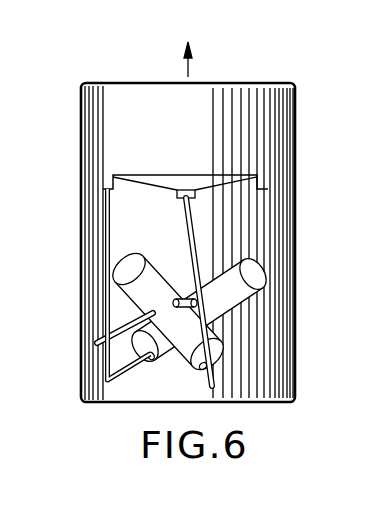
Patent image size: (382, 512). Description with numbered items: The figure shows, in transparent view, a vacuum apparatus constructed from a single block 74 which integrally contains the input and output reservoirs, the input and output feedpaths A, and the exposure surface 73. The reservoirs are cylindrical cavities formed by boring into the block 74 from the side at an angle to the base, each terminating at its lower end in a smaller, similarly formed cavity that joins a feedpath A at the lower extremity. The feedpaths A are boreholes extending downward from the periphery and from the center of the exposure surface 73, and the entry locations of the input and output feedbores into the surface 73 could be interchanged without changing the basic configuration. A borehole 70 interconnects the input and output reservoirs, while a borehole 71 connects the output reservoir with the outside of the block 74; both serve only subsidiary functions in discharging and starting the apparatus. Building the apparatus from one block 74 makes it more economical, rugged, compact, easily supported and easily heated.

The exposure surface 73 is at (158, 177).
The block 74 is at (283, 251).
The borehole 70 is at (189, 298).
The borehole 71 is at (96, 341).
The feedpath A is at (105, 221).